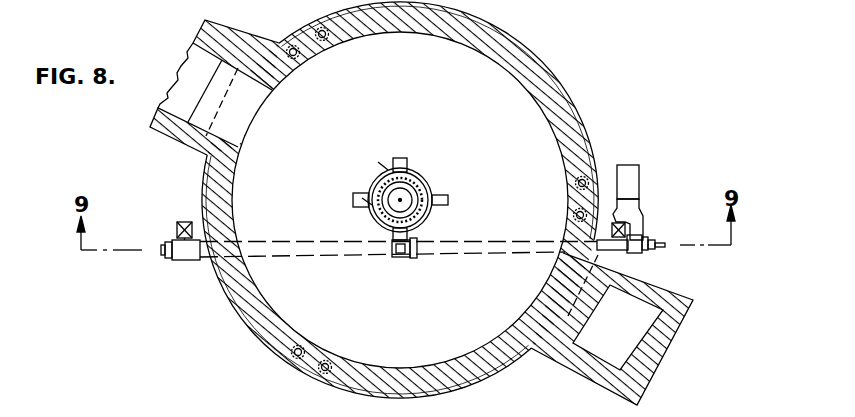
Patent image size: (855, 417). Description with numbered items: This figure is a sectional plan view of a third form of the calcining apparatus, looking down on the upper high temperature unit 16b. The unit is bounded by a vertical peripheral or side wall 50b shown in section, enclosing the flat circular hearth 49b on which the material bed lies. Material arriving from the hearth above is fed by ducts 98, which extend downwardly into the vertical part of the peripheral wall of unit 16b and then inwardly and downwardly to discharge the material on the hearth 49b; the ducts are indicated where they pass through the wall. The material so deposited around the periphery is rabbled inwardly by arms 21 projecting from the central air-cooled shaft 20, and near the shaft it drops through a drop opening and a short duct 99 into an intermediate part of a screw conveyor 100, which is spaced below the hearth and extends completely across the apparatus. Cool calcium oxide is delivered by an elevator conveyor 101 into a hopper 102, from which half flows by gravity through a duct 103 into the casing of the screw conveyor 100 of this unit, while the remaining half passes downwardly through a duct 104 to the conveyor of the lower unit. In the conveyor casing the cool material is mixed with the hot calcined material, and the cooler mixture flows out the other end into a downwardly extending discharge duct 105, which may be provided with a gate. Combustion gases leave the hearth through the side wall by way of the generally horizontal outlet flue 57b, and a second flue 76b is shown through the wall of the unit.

The upper unit 16b is at (552, 70).
The peripheral or side wall 50b is at (551, 103).
The hearth 49b is at (533, 130).
The duct 98 is at (303, 60).
The outlet flue 57b is at (222, 130).
The outlet flue 76b is at (634, 333).
The central air-cooled shaft 20 is at (415, 190).
The arm 21 is at (359, 177).
The short duct 99 is at (404, 257).
The screw conveyor 100 is at (203, 260).
The elevator conveyor 101 is at (620, 165).
The hopper 102 is at (628, 210).
The duct 103 is at (642, 252).
The duct 104 is at (626, 222).
The discharge duct 105 is at (183, 221).